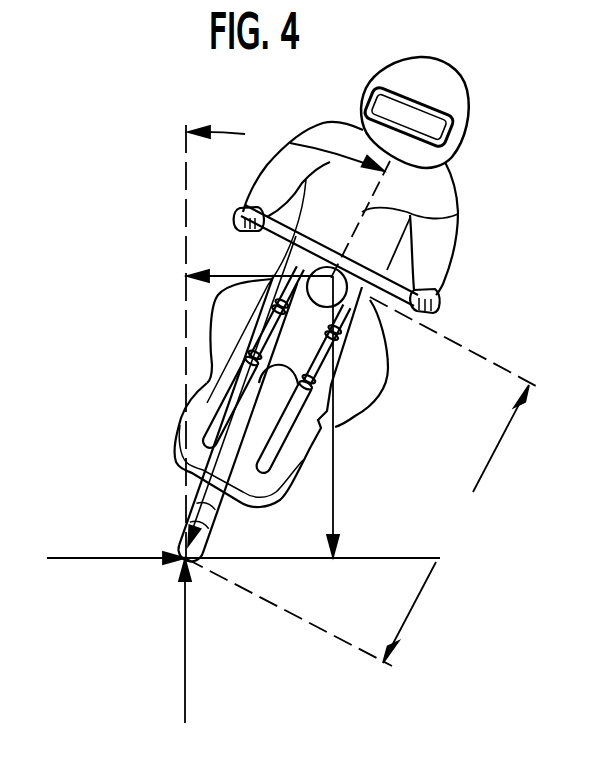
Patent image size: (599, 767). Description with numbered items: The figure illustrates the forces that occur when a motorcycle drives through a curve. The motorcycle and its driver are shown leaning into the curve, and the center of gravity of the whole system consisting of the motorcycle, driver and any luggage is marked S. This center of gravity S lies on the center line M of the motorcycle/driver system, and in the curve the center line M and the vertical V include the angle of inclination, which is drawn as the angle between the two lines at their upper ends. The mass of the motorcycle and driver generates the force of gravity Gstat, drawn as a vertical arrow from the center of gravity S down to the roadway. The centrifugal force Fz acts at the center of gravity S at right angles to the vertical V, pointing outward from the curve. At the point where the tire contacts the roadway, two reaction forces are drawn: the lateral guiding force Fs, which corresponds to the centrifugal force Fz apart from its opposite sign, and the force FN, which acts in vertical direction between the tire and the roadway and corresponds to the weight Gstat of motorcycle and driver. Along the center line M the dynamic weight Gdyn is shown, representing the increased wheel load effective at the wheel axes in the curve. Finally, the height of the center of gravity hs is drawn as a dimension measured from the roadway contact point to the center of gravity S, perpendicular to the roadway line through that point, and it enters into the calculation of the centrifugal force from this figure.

The center line M is at (455, 216).
The center of gravity S is at (350, 268).
The vertical V is at (186, 178).
The centrifugal force Fz is at (237, 277).
The lateral guiding force Fs is at (102, 583).
The vertical force between tire and roadway FN is at (274, 720).
The force of gravity Gstat is at (380, 416).
The dynamic weight Gdyn is at (215, 512).
The height of the center of gravity hs is at (360, 481).